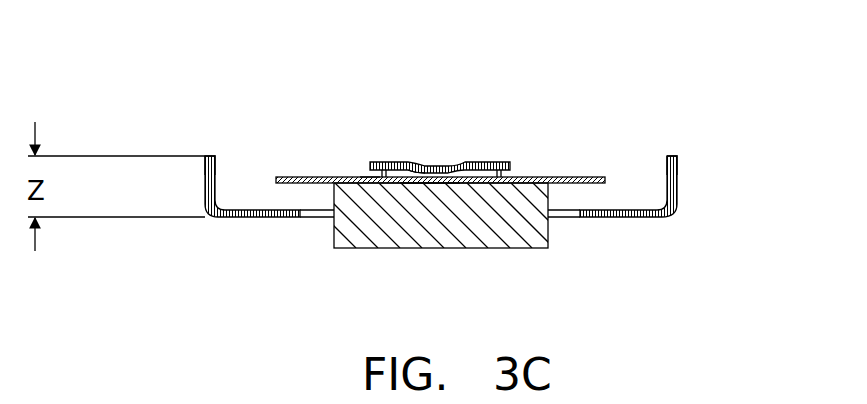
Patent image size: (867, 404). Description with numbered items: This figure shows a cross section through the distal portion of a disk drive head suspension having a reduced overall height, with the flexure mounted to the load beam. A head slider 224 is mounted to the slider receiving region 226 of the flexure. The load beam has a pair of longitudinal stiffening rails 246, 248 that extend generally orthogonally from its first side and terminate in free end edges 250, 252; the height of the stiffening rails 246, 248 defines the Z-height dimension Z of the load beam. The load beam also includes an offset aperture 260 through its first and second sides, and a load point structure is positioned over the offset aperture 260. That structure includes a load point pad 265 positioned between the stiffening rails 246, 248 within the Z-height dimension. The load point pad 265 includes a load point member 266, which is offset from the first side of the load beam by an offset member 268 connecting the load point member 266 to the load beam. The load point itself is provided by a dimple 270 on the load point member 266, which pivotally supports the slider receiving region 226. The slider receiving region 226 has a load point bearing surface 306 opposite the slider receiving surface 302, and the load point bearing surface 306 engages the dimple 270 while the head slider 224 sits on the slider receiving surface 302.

The head slider 224 is at (494, 250).
The slider receiving region 226 is at (543, 175).
The longitudinal stiffening rail 246 is at (203, 176).
The longitudinal stiffening rail 248 is at (677, 178).
The free end edge 250 is at (212, 154).
The free end edge 252 is at (672, 153).
The offset aperture 260 is at (313, 220).
The load point pad 265 is at (397, 157).
The load point member 266 is at (487, 157).
The offset member 268 is at (367, 174).
The dimple 270 is at (468, 166).
The slider receiving surface 302 is at (420, 188).
The load point bearing surface 306 is at (416, 170).